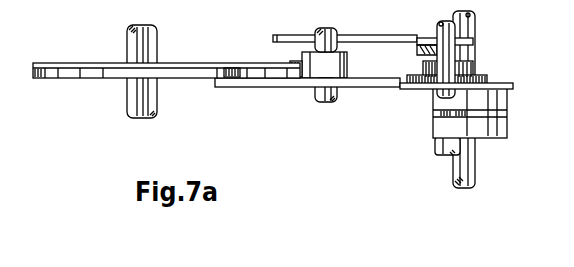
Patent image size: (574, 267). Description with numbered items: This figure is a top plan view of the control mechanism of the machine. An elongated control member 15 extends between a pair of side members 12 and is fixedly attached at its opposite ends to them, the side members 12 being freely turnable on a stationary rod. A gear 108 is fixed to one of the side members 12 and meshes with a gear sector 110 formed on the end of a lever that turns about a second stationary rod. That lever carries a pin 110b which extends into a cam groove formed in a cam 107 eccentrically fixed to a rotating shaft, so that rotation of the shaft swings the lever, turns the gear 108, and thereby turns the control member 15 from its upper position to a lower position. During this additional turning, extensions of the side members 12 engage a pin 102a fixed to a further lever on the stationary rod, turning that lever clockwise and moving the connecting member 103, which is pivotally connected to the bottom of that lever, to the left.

The cam 107 is at (91, 71).
The gear sector 110 is at (278, 82).
The pin 110b is at (232, 68).
The connecting member 103 is at (368, 36).
The gear 108 is at (478, 70).
The side member 12 is at (501, 86).
The pin 102a is at (450, 80).
The control member 15 is at (443, 122).